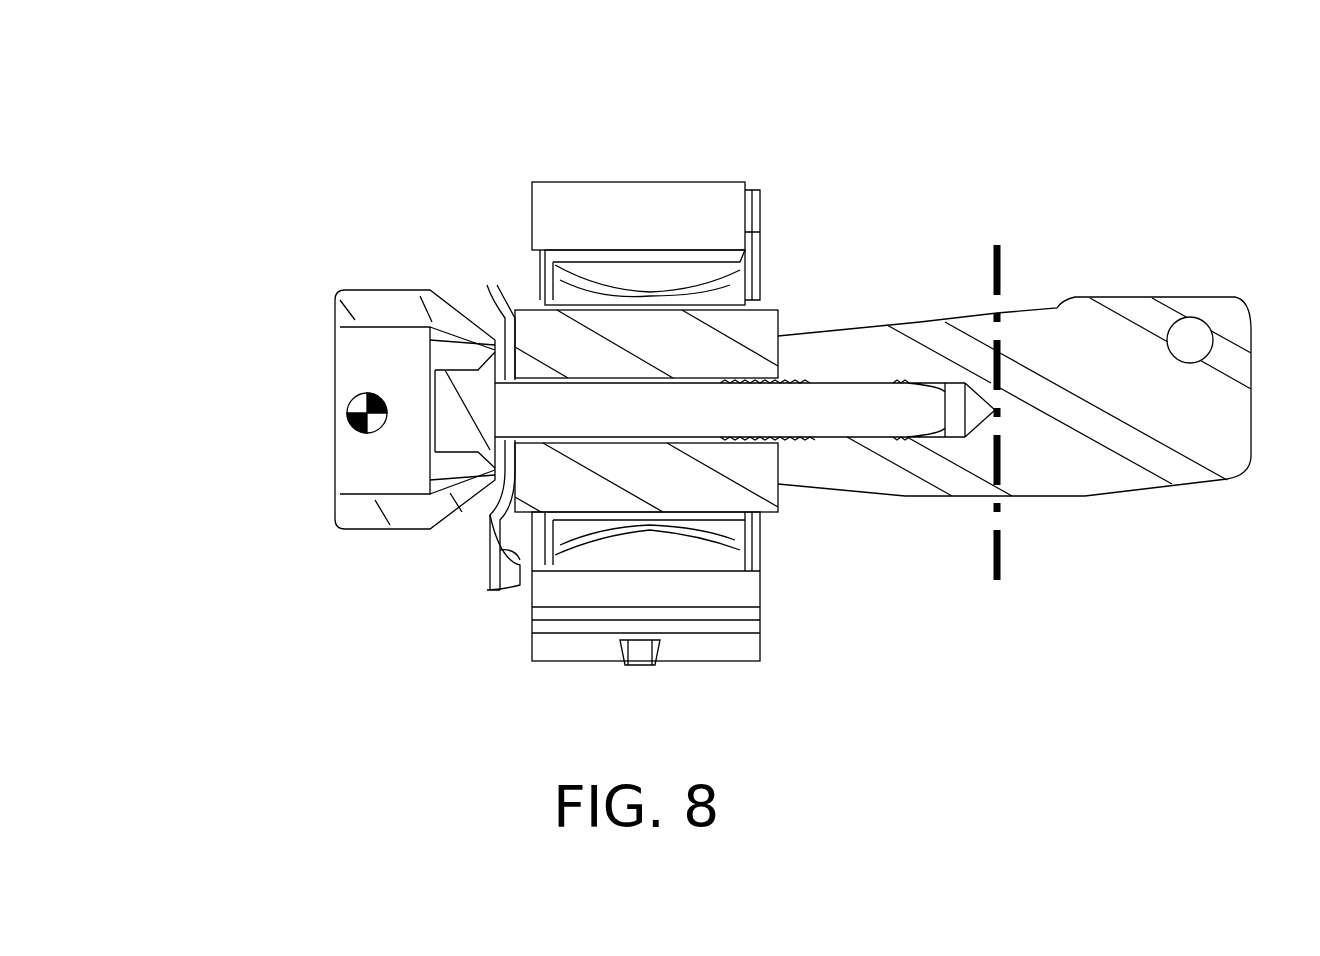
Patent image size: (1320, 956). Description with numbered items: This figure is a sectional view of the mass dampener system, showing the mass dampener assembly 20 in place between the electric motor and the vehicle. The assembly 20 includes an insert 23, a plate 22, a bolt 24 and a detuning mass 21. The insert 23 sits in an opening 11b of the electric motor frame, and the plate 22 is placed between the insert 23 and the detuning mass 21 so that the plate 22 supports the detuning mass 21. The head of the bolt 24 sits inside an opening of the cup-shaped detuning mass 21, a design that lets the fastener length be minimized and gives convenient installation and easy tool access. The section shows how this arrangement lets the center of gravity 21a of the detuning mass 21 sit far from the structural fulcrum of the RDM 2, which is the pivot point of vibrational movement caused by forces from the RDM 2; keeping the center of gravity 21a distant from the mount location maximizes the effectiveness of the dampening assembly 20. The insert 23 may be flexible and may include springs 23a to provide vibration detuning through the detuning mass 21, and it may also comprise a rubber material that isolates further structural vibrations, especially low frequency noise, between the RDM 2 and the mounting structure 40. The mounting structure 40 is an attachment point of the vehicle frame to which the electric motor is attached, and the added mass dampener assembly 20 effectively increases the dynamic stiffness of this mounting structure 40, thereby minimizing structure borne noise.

The RDM 2 is at (1003, 553).
The opening 11b is at (638, 248).
The mass dampener assembly 20 is at (381, 716).
The detuning mass 21 is at (400, 308).
The center of gravity 21a is at (345, 395).
The plate 22 is at (492, 300).
The insert 23 is at (760, 325).
The springs 23a is at (675, 548).
The bolt 24 is at (448, 427).
The mounting structure 40 is at (1143, 192).